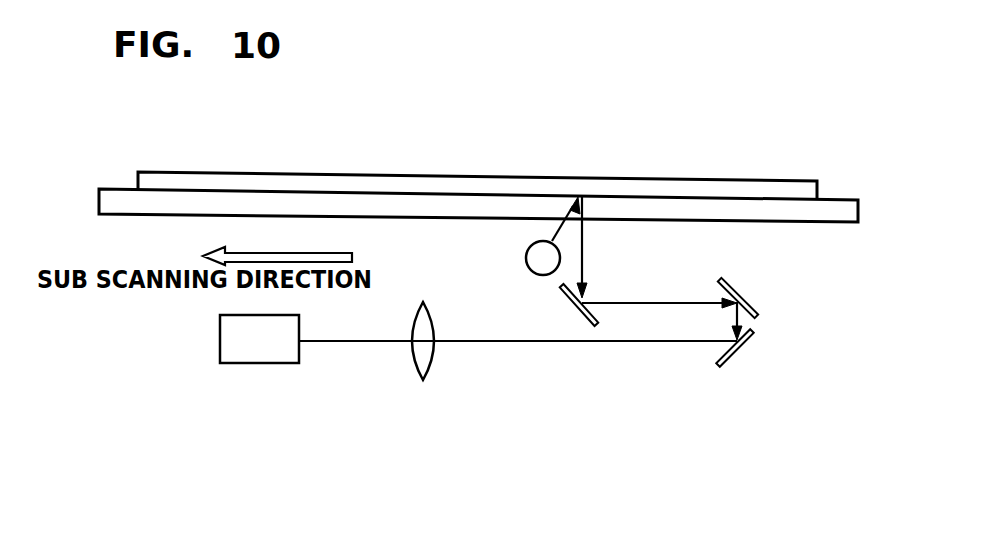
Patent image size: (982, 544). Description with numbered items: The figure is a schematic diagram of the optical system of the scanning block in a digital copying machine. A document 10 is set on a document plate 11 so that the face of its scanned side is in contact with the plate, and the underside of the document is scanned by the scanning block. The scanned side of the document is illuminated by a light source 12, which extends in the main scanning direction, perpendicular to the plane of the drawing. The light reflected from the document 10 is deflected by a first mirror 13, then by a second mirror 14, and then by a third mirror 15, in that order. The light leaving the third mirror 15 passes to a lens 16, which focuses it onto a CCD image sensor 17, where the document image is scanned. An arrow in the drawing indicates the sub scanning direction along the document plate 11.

The document 10 is at (651, 180).
The document plate 11 is at (843, 198).
The light source 12 is at (526, 259).
The first mirror 13 is at (580, 321).
The second mirror 14 is at (733, 285).
The third mirror 15 is at (742, 347).
The lens 16 is at (423, 381).
The CCD image sensor 17 is at (253, 364).